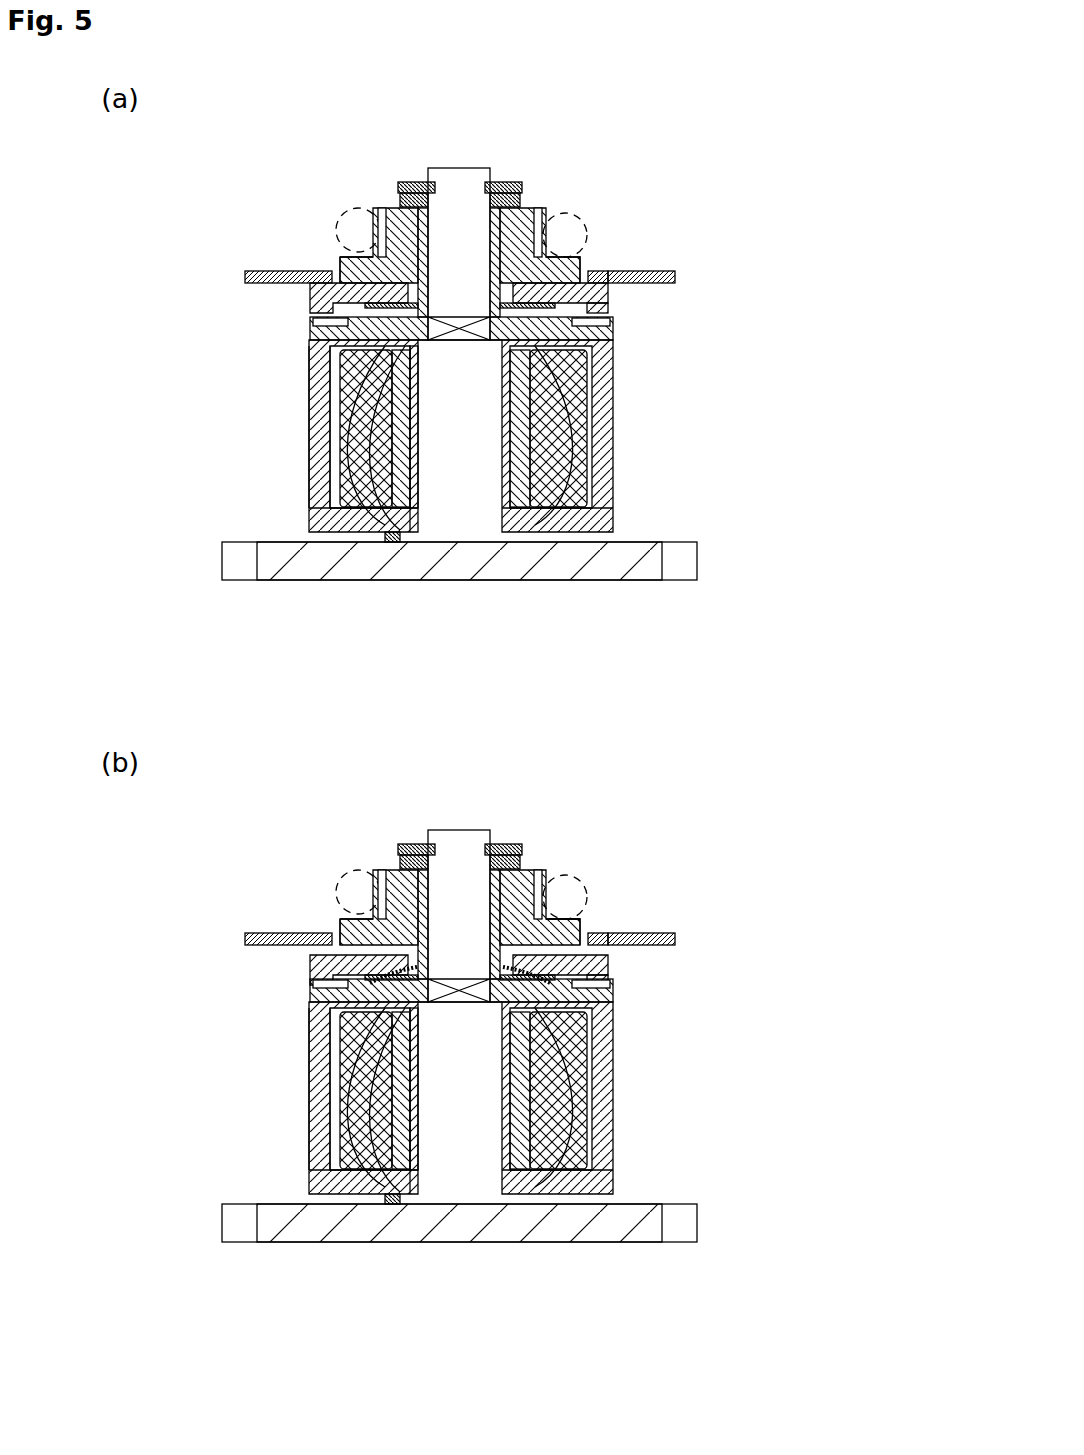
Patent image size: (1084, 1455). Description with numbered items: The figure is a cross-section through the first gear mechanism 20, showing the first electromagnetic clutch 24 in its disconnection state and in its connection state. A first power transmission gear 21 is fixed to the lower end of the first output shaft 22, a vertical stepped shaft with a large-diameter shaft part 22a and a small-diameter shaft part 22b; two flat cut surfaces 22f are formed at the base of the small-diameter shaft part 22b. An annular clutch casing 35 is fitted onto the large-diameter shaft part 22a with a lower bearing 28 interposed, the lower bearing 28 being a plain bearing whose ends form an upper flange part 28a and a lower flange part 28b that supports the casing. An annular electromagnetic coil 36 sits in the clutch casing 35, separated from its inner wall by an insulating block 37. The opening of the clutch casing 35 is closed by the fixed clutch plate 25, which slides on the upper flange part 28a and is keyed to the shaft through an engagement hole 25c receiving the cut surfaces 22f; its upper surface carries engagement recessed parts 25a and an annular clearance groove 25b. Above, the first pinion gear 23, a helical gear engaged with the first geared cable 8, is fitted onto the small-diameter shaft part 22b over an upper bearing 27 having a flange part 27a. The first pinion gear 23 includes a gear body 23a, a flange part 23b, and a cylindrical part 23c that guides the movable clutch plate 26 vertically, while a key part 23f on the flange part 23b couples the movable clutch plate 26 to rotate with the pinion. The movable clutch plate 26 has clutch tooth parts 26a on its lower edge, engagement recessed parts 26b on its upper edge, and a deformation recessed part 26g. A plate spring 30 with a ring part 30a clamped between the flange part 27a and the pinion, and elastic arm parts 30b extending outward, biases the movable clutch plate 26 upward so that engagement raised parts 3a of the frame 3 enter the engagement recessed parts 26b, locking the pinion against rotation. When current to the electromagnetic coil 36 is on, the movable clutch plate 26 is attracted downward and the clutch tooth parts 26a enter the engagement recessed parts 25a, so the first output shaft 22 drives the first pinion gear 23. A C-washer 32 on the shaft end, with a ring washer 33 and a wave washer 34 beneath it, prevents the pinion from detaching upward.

The frame 3 is at (652, 271).
The engagement raised part 3a is at (612, 272).
The first geared cable 8 is at (358, 208).
The first gear mechanism 20 is at (304, 166).
The first power transmission gear 21 is at (698, 561).
The first output shaft 22 is at (460, 168).
The large-diameter shaft part 22a is at (552, 430).
The small-diameter shaft part 22b is at (585, 240).
The cut surface 22f is at (462, 316).
The first pinion gear 23 is at (210, 255).
The gear body 23a is at (380, 236).
The flange part 23b is at (346, 262).
The cylindrical part 23c is at (336, 277).
The key part 23f is at (560, 917).
The first electromagnetic clutch 24 is at (618, 455).
The fixed clutch plate 25 is at (320, 330).
The engagement recessed part 25a is at (608, 325).
The annular clearance groove 25b is at (444, 340).
The engagement hole 25c is at (497, 393).
The movable clutch plate 26 is at (312, 294).
The clutch tooth part 26a is at (335, 310).
The engagement recessed part 26b is at (606, 290).
The deformation recessed part 26g is at (620, 350).
The upper bearing 27 is at (402, 258).
The flange part 27a is at (345, 430).
The lower bearing 28 is at (402, 512).
The upper flange part 28a is at (330, 470).
The lower flange part 28b is at (398, 542).
The plate spring 30 is at (212, 420).
The ring part 30a is at (316, 385).
The elastic arm part 30b is at (312, 360).
The C-washer 32 is at (500, 182).
The ring washer 33 is at (512, 197).
The wave washer 34 is at (530, 214).
The clutch casing 35 is at (602, 470).
The electromagnetic coil 36 is at (566, 385).
The insulating block 37 is at (580, 440).